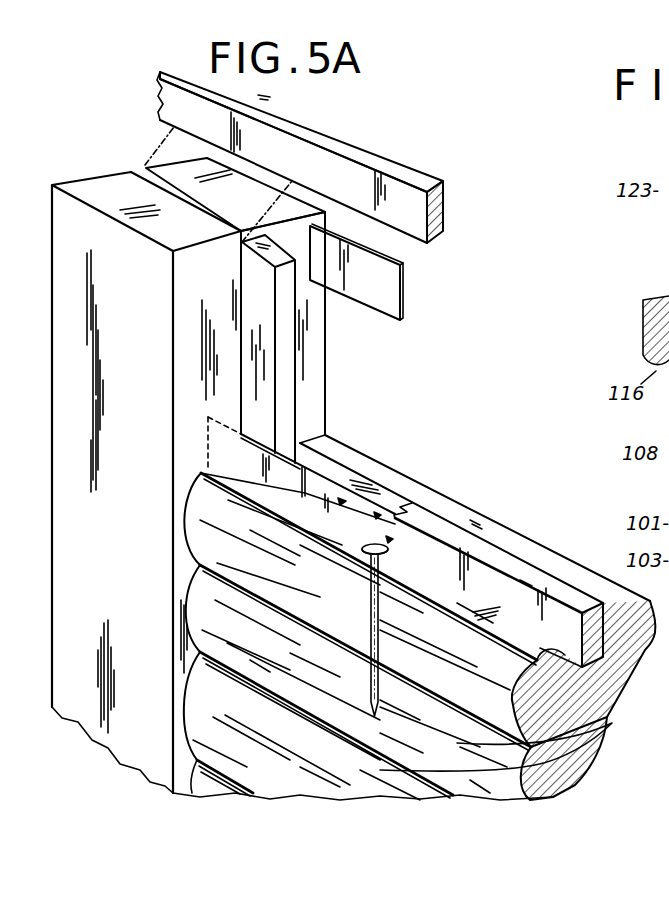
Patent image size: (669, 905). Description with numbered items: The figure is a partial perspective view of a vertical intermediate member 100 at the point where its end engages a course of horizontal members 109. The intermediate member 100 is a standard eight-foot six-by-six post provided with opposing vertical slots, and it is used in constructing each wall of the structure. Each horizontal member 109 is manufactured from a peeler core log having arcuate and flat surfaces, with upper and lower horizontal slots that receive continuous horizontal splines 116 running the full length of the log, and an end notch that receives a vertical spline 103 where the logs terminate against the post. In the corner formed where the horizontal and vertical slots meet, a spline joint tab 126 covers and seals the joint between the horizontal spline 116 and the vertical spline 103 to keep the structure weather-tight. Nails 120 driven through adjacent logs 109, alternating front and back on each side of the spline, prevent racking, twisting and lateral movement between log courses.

The intermediate member 100 is at (83, 218).
The vertical spline 103 is at (287, 387).
The horizontal spline 116 is at (368, 157).
The spline joint tab 126 is at (406, 293).
The horizontal member 109 is at (612, 723).
The nail 120 is at (372, 610).